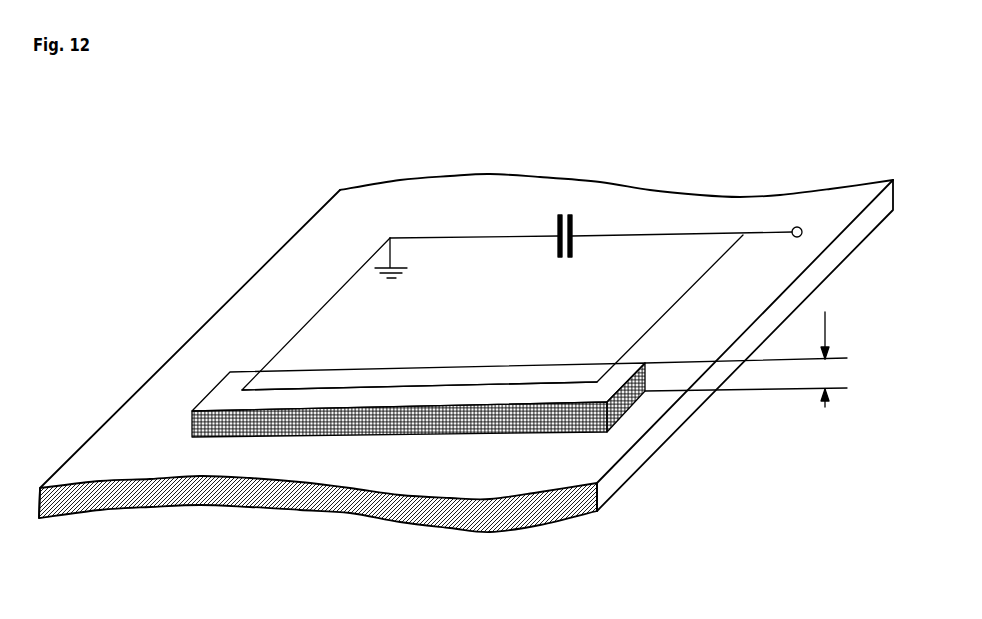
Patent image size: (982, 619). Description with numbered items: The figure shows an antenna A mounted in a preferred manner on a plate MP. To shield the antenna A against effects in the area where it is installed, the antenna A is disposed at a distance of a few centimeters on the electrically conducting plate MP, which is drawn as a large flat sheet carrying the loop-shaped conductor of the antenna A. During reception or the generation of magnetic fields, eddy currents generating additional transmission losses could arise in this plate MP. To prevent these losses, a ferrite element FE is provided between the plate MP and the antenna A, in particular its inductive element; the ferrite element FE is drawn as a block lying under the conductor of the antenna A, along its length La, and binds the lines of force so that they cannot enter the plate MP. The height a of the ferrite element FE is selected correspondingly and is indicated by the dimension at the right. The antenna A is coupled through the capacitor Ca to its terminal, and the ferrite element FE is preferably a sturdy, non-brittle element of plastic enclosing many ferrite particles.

The plate MP is at (527, 463).
The ferrite element FE is at (297, 402).
The antenna A is at (317, 304).
The coupling capacitor Ca is at (585, 226).
The antenna conductor length La is at (419, 360).
The height of the ferrite element a is at (746, 359).